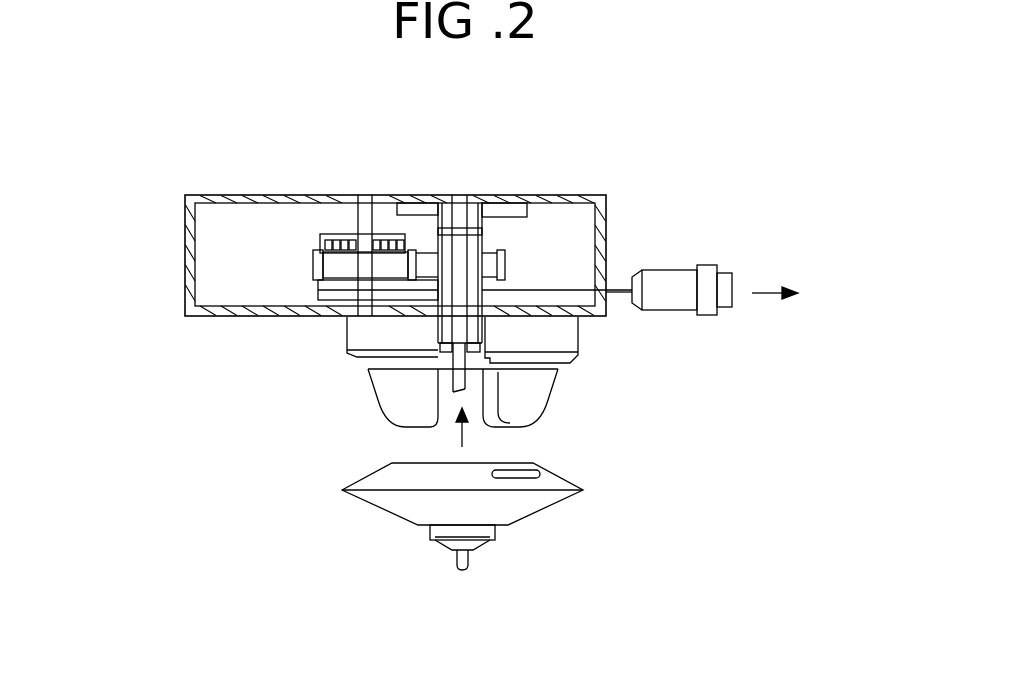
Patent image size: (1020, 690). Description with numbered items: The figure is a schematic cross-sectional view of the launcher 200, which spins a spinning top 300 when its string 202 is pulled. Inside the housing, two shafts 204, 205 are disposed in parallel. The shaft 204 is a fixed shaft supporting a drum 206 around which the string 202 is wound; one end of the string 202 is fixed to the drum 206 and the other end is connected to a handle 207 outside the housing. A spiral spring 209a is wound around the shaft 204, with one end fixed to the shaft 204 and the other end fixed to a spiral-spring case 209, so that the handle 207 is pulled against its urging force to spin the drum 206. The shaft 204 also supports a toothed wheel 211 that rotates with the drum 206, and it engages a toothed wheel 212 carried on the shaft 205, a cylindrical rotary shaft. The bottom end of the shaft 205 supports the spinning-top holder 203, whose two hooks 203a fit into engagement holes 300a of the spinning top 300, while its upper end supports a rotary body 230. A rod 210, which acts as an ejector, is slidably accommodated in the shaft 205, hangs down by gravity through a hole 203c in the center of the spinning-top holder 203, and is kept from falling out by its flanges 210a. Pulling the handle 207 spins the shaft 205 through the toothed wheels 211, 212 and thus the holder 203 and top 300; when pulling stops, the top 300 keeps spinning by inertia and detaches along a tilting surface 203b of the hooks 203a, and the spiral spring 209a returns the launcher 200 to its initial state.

The launcher 200 is at (204, 330).
The string 202 is at (610, 288).
The spinning-top holder 203 is at (560, 330).
The hooks 203a is at (538, 395).
The tilting surface 203b is at (368, 388).
The hole 203c is at (452, 362).
The shaft 204 is at (363, 200).
The shaft 205 is at (438, 337).
The drum 206 is at (332, 295).
The handle 207 is at (677, 300).
The spiral-spring case 209 is at (333, 235).
The spiral spring 209a is at (342, 238).
The rod 210 is at (458, 203).
The flanges 210a is at (470, 226).
The toothed wheel 211 is at (317, 263).
The toothed wheel 212 is at (508, 262).
The rotary body 230 is at (513, 212).
The spinning top 300 is at (374, 530).
The engagement holes 300a is at (515, 475).